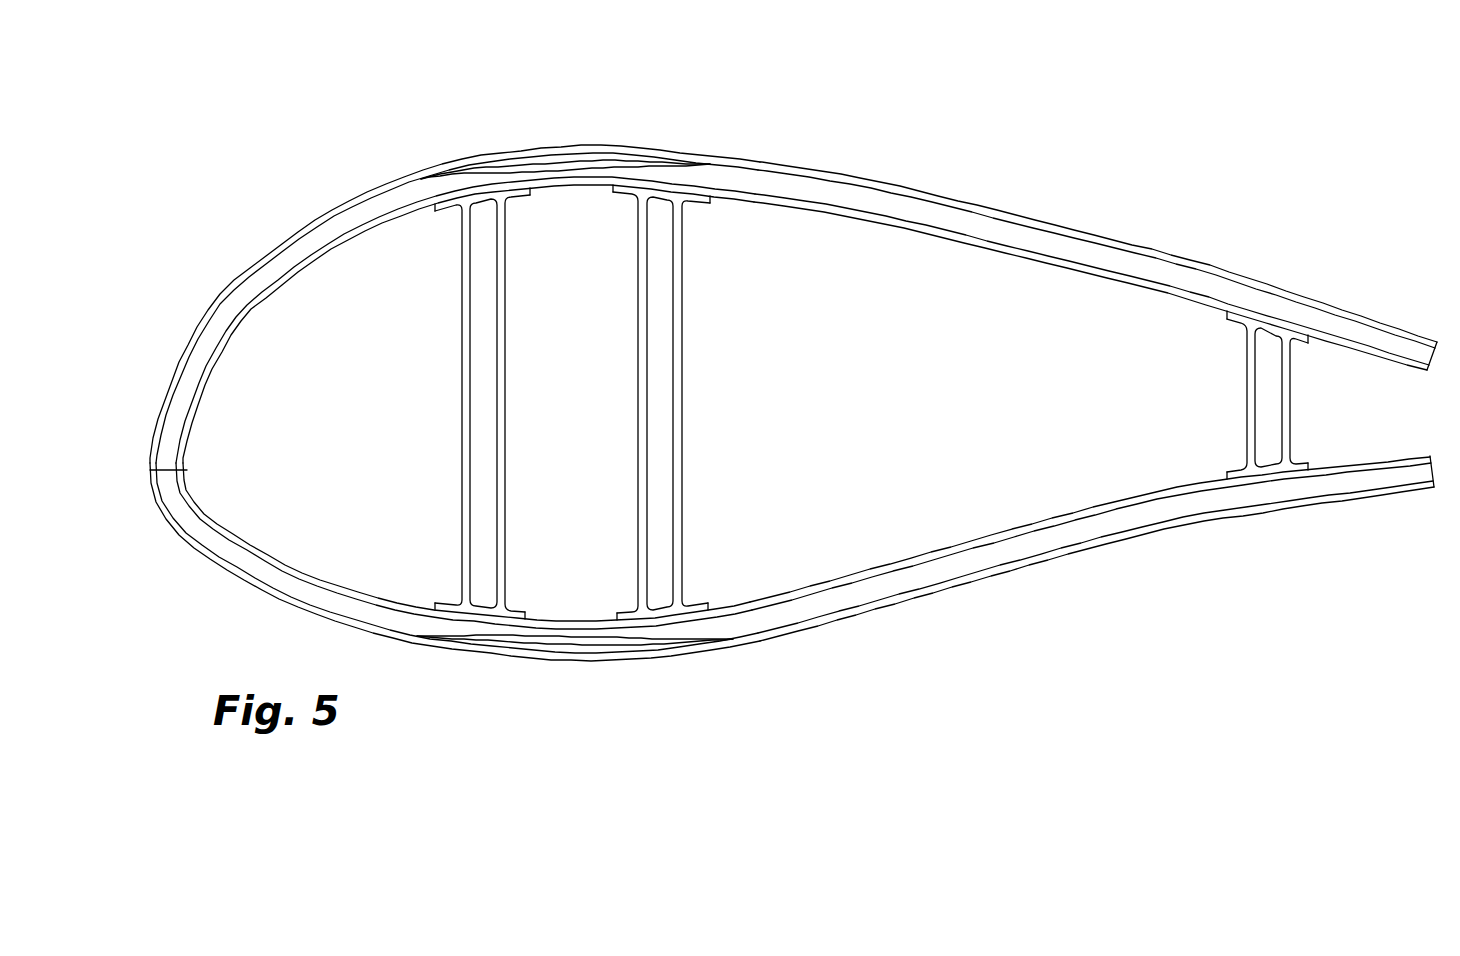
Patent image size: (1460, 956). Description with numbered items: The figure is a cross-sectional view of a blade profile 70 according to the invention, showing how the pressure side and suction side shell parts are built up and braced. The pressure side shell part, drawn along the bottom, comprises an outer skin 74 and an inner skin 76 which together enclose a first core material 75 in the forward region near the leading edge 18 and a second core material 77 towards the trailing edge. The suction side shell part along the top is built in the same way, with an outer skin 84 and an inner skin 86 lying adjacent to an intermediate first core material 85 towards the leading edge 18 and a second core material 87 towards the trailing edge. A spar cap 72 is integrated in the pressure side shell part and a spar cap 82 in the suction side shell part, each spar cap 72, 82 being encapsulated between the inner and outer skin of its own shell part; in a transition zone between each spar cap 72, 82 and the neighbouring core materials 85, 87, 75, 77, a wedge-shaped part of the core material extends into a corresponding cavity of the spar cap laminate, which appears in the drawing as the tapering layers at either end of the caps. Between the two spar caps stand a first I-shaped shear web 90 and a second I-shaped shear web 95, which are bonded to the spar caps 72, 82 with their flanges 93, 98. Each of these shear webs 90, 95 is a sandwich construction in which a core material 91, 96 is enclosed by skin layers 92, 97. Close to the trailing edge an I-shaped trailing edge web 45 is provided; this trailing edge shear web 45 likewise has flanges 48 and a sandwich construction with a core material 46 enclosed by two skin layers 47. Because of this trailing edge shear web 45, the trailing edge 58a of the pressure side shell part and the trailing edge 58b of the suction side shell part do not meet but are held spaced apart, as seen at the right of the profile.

The blade profile 70 is at (821, 76).
The leading edge 18 is at (150, 470).
The trailing edge of the pressure side shell part 58a is at (1435, 487).
The trailing edge of the suction side shell part 58b is at (1437, 355).
The spar cap 72 is at (570, 660).
The spar cap 82 is at (565, 150).
The outer skin 74 is at (253, 590).
The first core material 75 is at (243, 560).
The inner skin 76 is at (300, 573).
The second core material 77 is at (945, 572).
The outer skin 84 is at (322, 215).
The first core material 85 is at (300, 257).
The inner skin 86 is at (277, 297).
The second core material 87 is at (1040, 232).
The first I-shaped shear web 90 is at (505, 403).
The core material 91 is at (490, 430).
The skin layers 92 is at (503, 480).
The flanges 93 is at (520, 612).
The second I-shaped shear web 95 is at (683, 402).
The core material 96 is at (660, 455).
The skin layers 97 is at (680, 490).
The flanges 98 is at (700, 600).
The I-shaped trailing edge web 45 is at (1262, 395).
The core material 46 is at (1255, 420).
The skin layers 47 is at (1290, 420).
The flanges 48 is at (1295, 470).